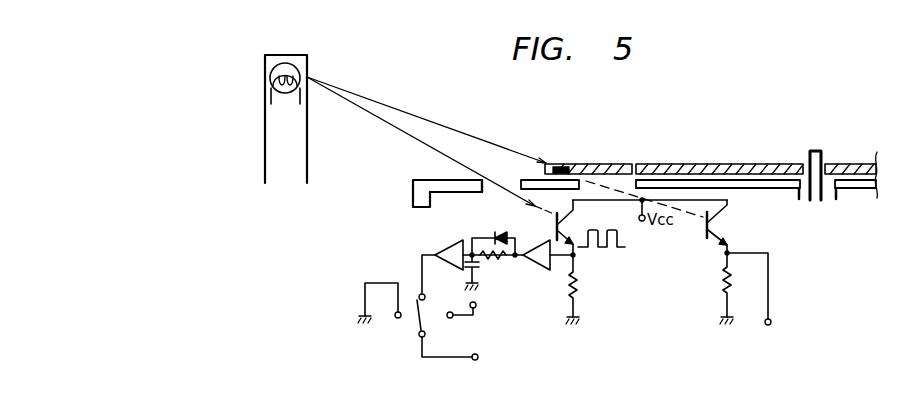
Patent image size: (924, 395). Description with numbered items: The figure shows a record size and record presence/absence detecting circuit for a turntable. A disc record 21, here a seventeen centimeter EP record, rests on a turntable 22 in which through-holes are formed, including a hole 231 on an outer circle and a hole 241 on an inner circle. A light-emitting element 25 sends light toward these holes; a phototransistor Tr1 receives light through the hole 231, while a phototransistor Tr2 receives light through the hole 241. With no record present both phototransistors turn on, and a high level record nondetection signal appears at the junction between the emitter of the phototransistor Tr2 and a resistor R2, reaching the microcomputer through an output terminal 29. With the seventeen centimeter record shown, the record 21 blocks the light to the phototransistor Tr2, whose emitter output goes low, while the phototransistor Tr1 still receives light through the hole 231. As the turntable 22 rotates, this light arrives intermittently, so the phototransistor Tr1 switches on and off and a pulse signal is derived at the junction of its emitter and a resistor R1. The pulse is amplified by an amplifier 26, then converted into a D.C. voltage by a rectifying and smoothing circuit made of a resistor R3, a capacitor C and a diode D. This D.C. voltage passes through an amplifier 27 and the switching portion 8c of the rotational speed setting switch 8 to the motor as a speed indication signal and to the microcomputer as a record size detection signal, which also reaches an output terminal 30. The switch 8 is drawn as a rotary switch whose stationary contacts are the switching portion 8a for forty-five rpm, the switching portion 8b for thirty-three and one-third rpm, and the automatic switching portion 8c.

The light-emitting element 25 is at (302, 119).
The turntable 22 is at (413, 190).
The through-hole 231 is at (483, 187).
The through-hole 241 is at (587, 181).
The disc record 21 is at (697, 164).
The amplifier 27 is at (452, 243).
The amplifier 26 is at (536, 243).
The rotational speed setting switch 8 is at (431, 325).
The switching portion 8a is at (474, 322).
The switching portion 8b is at (381, 314).
The switching portion 8c is at (417, 294).
The output terminal 30 is at (486, 359).
The output terminal 29 is at (760, 293).
The diode D is at (493, 234).
The capacitor C is at (481, 272).
The resistor R1 is at (584, 289).
The resistor R2 is at (738, 288).
The resistor R3 is at (508, 262).
The phototransistor Tr1 is at (575, 221).
The phototransistor Tr2 is at (731, 226).